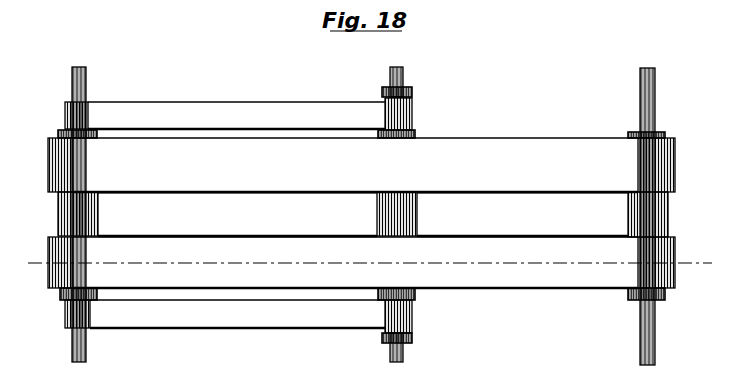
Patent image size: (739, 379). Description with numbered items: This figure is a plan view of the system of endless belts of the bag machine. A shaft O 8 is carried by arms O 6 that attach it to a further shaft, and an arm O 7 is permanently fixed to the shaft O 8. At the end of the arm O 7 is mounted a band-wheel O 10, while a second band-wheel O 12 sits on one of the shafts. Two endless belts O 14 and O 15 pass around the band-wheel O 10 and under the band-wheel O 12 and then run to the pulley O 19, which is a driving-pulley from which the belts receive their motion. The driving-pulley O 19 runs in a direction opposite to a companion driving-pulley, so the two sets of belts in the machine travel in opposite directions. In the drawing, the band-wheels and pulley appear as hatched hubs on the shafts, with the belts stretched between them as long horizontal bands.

The arm 6 is at (382, 91).
The arm 7 is at (238, 215).
The shaft 8 is at (403, 90).
The band-wheel 10 is at (64, 214).
The band-wheel 12 is at (413, 214).
The endless belt 14 is at (361, 262).
The endless belt 15 is at (361, 165).
The driving-pulley 19 is at (665, 214).